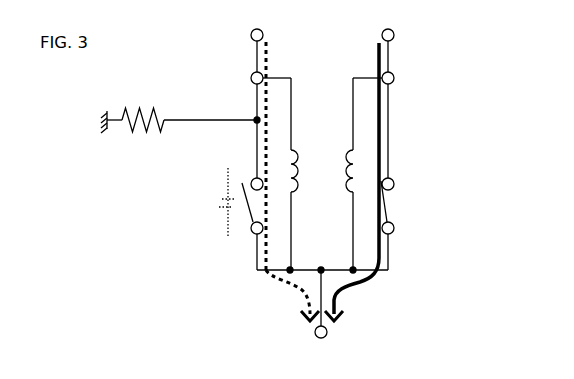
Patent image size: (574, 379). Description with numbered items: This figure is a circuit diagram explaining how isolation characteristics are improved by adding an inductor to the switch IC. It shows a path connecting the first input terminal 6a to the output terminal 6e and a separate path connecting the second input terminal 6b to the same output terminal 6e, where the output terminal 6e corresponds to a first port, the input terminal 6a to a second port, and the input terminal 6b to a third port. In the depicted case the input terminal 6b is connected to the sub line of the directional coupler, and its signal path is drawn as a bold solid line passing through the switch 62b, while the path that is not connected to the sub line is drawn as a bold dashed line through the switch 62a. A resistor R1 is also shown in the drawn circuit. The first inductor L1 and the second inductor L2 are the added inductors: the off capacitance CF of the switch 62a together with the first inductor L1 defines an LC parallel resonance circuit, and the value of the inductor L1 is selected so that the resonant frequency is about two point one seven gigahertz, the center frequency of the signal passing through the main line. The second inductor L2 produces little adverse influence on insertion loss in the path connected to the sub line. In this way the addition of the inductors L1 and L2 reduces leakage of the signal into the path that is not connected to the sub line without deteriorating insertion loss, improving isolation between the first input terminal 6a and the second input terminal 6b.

The first input terminal 6a is at (252, 31).
The second input terminal 6b is at (394, 33).
The output terminal 6e is at (324, 338).
The resistor R1 is at (179, 109).
The first inductor L1 is at (300, 148).
The second inductor L2 is at (335, 182).
The off capacitance CF is at (220, 204).
The switch 62a is at (247, 220).
The second switch 62b is at (391, 204).